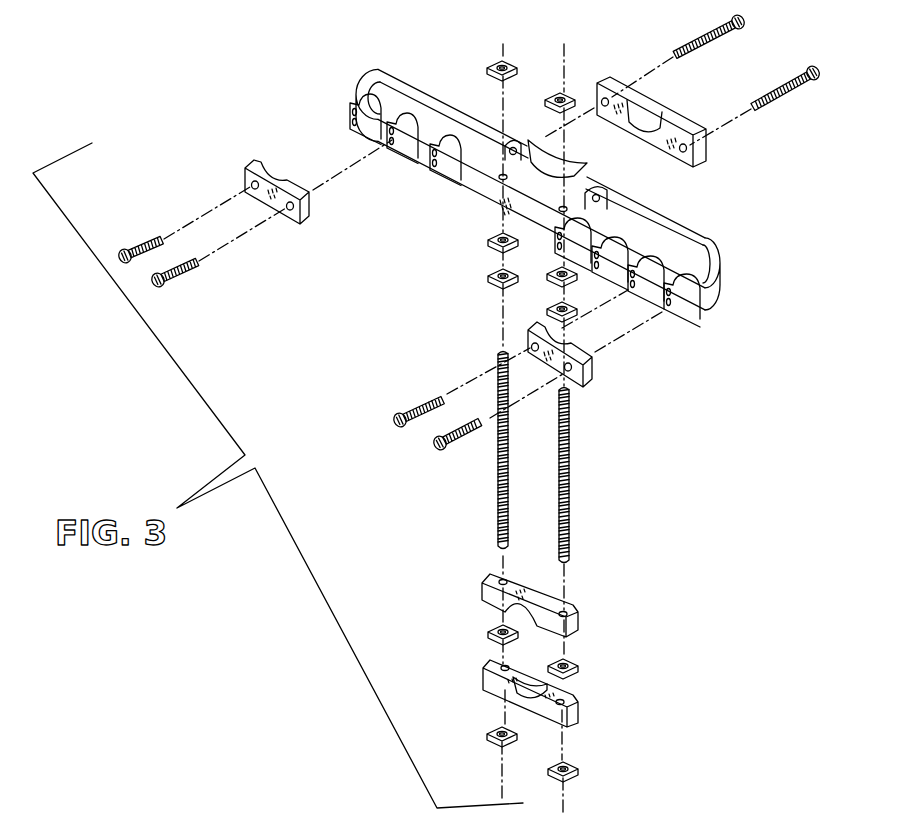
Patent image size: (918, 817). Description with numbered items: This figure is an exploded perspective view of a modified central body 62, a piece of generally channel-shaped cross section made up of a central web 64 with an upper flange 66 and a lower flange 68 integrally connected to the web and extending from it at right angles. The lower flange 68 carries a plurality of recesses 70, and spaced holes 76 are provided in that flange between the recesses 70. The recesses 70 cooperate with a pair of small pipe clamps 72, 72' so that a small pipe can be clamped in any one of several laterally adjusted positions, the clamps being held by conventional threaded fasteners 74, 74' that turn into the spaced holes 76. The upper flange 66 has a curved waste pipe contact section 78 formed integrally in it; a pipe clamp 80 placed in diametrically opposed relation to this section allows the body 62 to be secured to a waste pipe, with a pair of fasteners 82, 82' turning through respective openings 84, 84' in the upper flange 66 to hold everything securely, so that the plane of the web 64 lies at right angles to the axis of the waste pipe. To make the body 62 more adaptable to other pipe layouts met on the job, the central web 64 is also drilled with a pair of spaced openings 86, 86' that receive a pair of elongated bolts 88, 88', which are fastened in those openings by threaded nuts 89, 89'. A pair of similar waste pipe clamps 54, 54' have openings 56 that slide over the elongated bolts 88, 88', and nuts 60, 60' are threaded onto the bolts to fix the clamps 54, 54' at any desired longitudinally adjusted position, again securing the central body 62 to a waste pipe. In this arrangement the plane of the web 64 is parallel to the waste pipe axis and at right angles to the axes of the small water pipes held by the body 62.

The waste pipe clamp 54 is at (553, 698).
The waste pipe clamp 54' is at (558, 605).
The openings 56 is at (498, 582).
The nut 60 is at (587, 535).
The nut 60' is at (480, 529).
The modified central body 62 is at (512, 187).
The central web 64 is at (433, 122).
The upper flange 66 is at (648, 220).
The lower flange 68 is at (712, 284).
The recesses 70 is at (445, 169).
The small pipe clamp 72 is at (578, 368).
The small pipe clamp 72' is at (275, 173).
The threaded fastener 74 is at (437, 441).
The threaded fastener 74' is at (165, 278).
The spaced holes 76 is at (348, 98).
The curved waste pipe contact section 78 is at (541, 140).
The pipe clamp 80 is at (618, 120).
The fastener 82 is at (759, 88).
The fastener 82' is at (700, 31).
The opening 84 is at (622, 183).
The opening 84' is at (520, 120).
The spaced opening 86 is at (482, 221).
The spaced opening 86' is at (545, 263).
The elongated bolt 88 is at (584, 475).
The elongated bolt 88' is at (523, 450).
The threaded nut 89 is at (578, 73).
The threaded nut 89' is at (489, 44).